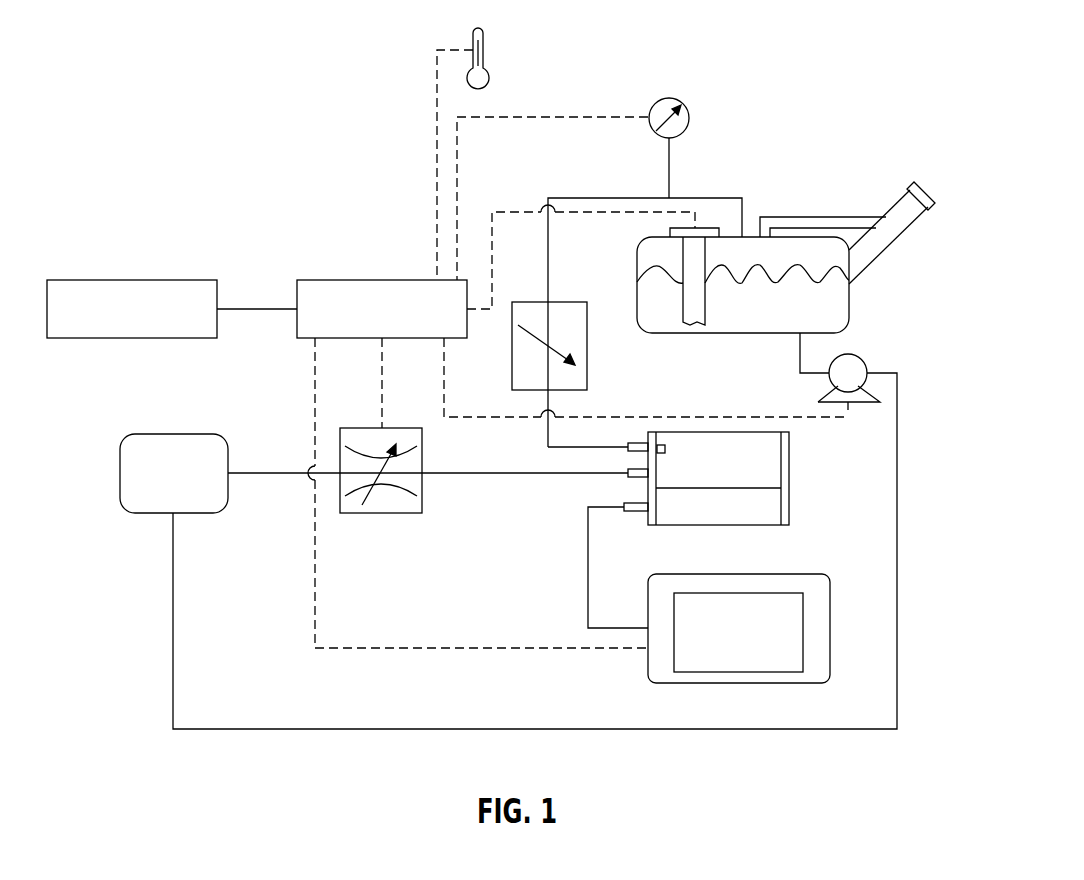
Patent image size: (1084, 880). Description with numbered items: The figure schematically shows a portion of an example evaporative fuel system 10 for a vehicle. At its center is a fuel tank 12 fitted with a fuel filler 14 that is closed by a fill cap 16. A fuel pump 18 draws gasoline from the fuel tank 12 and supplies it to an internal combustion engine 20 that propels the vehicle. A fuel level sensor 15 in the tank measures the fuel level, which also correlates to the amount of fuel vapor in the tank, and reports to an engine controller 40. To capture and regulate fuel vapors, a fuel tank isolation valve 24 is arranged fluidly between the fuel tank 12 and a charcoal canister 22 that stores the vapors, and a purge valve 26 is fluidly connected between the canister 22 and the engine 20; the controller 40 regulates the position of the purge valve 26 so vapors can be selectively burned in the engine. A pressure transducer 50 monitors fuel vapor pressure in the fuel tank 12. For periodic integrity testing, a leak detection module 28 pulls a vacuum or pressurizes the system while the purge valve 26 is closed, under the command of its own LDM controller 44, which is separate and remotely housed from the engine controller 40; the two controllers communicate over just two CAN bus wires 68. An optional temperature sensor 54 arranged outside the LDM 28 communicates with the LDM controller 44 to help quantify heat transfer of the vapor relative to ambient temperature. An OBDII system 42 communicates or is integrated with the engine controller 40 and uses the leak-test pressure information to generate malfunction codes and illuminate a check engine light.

The evaporative fuel system 10 is at (407, 211).
The fuel tank 12 is at (743, 285).
The fuel filler 14 is at (890, 232).
The fuel level sensor 15 is at (683, 308).
The fill cap 16 is at (923, 188).
The fuel pump 18 is at (864, 362).
The internal combustion engine 20 is at (174, 473).
The charcoal canister 22 is at (706, 478).
The fuel tank isolation valve 24 is at (587, 347).
The purge valve 26 is at (380, 513).
The leak detection module 28 is at (795, 573).
The engine controller 40 is at (355, 280).
The OBDII system 42 is at (100, 280).
The LDM controller 44 is at (803, 637).
The pressure transducer 50 is at (689, 118).
The temperature sensor 54 is at (484, 42).
The CAN bus wires 68 is at (399, 647).